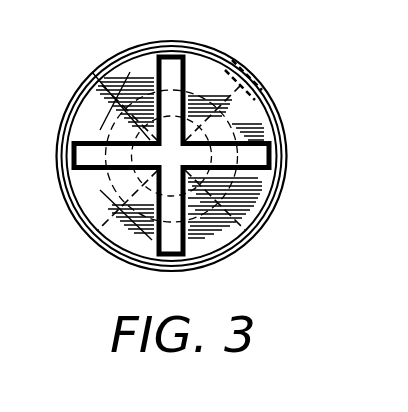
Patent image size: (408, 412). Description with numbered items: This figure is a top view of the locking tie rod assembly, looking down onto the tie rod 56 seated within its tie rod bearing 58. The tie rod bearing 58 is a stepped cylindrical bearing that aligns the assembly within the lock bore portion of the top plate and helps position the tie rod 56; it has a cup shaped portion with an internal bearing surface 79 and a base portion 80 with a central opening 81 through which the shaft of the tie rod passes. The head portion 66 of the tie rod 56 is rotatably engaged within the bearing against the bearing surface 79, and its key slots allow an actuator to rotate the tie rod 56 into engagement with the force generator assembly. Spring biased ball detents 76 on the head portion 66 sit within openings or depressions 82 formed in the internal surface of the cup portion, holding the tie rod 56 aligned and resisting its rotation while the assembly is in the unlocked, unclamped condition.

The tie rod 56 is at (248, 232).
The tie rod bearing 58 is at (233, 62).
The head portion 66 is at (258, 118).
The spring biased ball detents 76 is at (84, 224).
The internal bearing surface 79 is at (265, 182).
The base portion 80 is at (100, 67).
The central opening 81 is at (137, 45).
The openings or depressions 82 is at (108, 257).